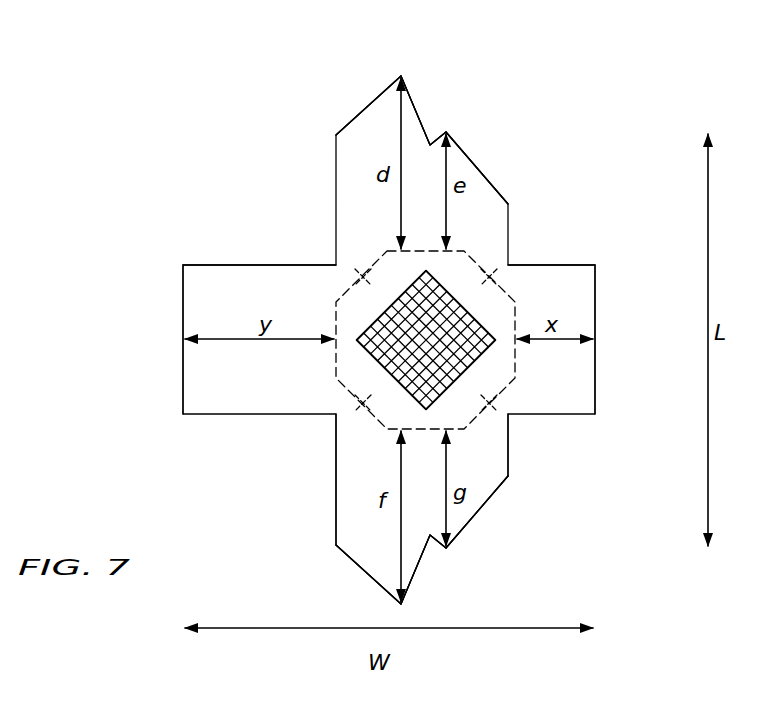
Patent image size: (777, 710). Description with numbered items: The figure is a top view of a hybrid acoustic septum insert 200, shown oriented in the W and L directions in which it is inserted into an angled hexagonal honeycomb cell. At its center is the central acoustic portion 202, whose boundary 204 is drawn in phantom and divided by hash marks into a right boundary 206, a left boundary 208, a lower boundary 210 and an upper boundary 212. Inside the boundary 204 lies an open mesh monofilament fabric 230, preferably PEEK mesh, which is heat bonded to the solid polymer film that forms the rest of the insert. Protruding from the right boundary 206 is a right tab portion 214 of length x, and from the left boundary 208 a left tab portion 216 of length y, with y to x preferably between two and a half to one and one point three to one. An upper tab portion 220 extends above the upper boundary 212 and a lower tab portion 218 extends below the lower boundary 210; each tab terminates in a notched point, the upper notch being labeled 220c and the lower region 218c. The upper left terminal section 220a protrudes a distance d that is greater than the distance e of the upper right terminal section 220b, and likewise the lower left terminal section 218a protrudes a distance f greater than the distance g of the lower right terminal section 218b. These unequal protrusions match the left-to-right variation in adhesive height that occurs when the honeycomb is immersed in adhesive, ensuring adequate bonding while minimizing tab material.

The acoustic septum insert 200 is at (590, 176).
The central acoustic portion 202 is at (484, 311).
The boundary 204 is at (390, 432).
The right boundary 206 is at (515, 357).
The left boundary 208 is at (336, 357).
The lower boundary 210 is at (462, 432).
The upper boundary 212 is at (421, 249).
The right tab portion 214 is at (557, 303).
The left tab portion 216 is at (227, 312).
The lower tab portion 218 is at (465, 470).
The lower left terminal section 218a is at (398, 521).
The lower right terminal section 218b is at (452, 511).
The lower right terminal section 218c is at (433, 550).
The upper tab portion 220 is at (418, 183).
The upper left terminal section 220a is at (402, 198).
The upper right terminal section 220b is at (475, 183).
The tab notch 220c is at (435, 108).
The open mesh monofilament fabric 230 is at (478, 358).